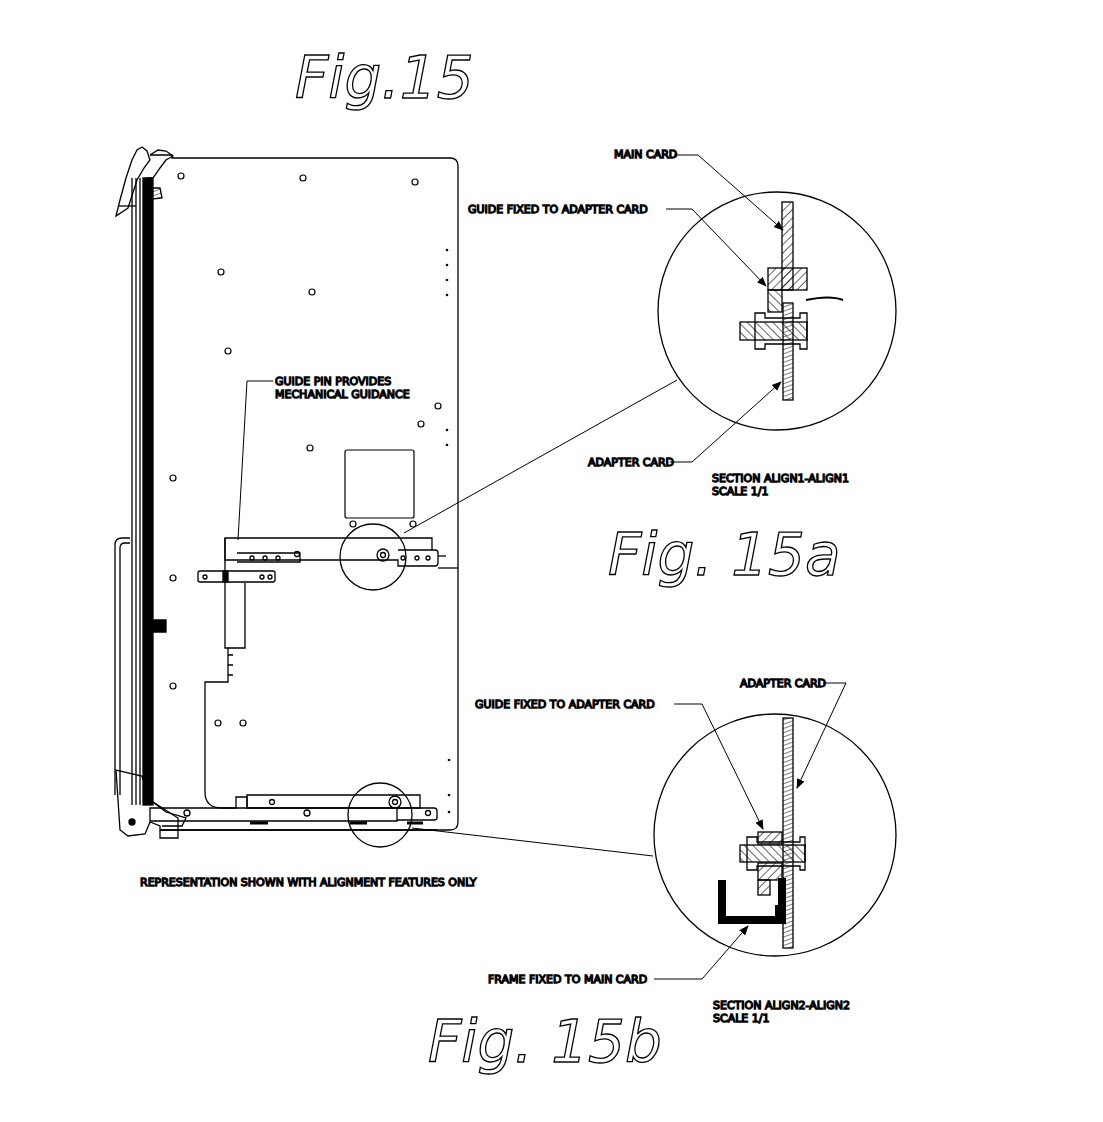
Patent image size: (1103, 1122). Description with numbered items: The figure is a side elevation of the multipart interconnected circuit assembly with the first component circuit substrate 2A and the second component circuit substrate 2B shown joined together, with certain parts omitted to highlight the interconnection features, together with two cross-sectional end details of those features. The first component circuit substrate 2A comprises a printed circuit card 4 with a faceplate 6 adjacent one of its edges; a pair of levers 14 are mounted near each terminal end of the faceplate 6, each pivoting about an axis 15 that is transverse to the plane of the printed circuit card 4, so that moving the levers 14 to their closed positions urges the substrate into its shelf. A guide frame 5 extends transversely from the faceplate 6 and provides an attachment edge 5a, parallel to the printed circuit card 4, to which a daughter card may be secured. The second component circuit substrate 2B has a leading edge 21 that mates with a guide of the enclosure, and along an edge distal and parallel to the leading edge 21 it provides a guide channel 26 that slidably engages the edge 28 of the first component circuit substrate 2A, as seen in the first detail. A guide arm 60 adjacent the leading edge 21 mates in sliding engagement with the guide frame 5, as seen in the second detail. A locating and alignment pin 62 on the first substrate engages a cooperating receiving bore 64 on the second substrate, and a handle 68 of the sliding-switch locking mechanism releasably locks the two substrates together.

In FIG. 15, the first component circuit substrate 2A is at (398, 226).
In FIG. 15A, the first component circuit substrate 2A is at (794, 212).
In FIG. 15, the second component circuit substrate 2B is at (358, 652).
In FIG. 15A, the second component circuit substrate 2B is at (798, 360).
In FIG. 15B, the second component circuit substrate 2B is at (799, 822).
In FIG. 15, the printed circuit card 4 is at (395, 323).
In FIG. 15A, the printed circuit card 4 is at (790, 256).
In FIG. 15, the guide frame 5 is at (218, 812).
In FIG. 15B, the guide frame 5 is at (720, 893).
In FIG. 15B, the attachment edge 5a is at (717, 907).
In FIG. 15, the faceplate 6 is at (132, 450).
In FIG. 15, the lever 14 is at (128, 180).
In FIG. 15, the axis 15 is at (148, 160).
In FIG. 15, the leading edge 21 is at (288, 830).
In FIG. 15, the guide channel 26 is at (322, 543).
In FIG. 15A, the guide channel 26 is at (806, 286).
In FIG. 15, the edge 28 is at (442, 545).
In FIG. 15, the guide arm 60 is at (330, 797).
In FIG. 15B, the guide arm 60 is at (745, 856).
In FIG. 15, the locating and alignment pin 62 is at (205, 570).
In FIG. 15, the receiving bore 64 is at (235, 580).
In FIG. 15, the handle 68 is at (118, 682).